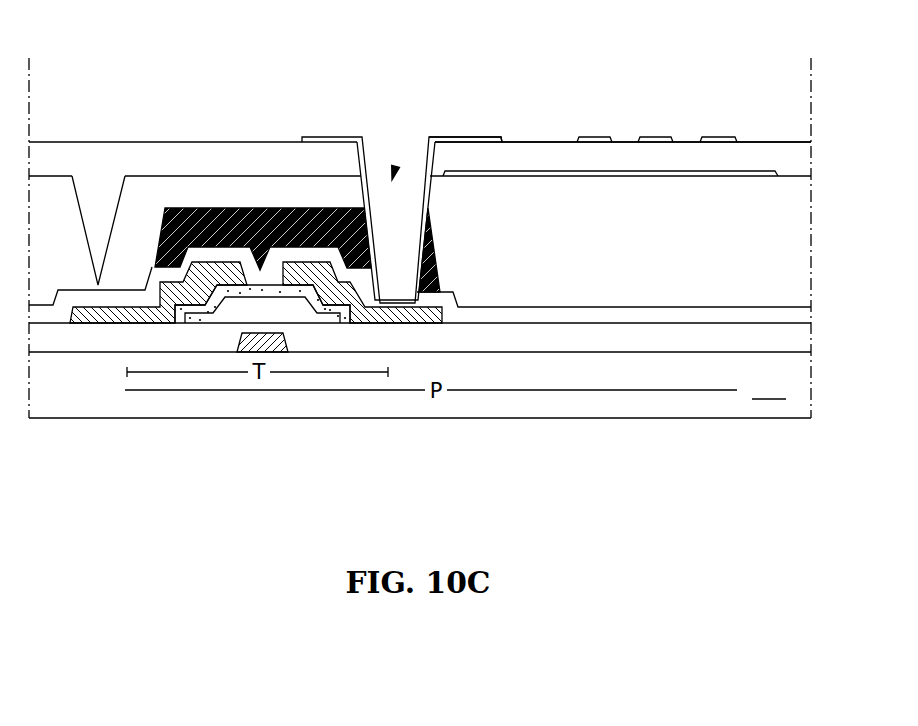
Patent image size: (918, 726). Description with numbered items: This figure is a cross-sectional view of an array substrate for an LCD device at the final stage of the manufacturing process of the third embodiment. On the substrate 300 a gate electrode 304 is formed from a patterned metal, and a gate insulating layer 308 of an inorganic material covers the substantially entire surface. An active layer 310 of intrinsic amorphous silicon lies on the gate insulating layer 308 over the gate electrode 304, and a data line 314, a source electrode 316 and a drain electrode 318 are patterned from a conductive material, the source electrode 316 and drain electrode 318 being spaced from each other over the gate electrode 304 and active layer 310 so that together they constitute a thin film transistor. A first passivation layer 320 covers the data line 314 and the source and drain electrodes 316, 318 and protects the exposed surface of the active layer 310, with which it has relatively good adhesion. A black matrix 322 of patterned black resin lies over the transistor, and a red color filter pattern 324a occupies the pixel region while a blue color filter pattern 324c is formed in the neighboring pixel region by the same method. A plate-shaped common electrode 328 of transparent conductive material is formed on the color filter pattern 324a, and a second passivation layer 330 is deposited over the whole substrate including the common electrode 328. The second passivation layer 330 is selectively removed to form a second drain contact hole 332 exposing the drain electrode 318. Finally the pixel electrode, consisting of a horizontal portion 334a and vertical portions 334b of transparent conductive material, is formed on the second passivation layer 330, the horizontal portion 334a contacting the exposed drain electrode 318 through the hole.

The substrate 300 is at (810, 390).
The gate electrode 304 is at (280, 353).
The gate insulating layer 308 is at (622, 337).
The active layer 310 is at (298, 288).
The data line 314 is at (80, 323).
The source electrode 316 is at (227, 250).
The drain electrode 318 is at (400, 317).
The first passivation layer 320 is at (735, 317).
The black matrix 322 is at (442, 273).
The color filter pattern 324a is at (161, 182).
The blue color filter pattern 324c is at (73, 176).
The common electrode 328 is at (535, 170).
The second passivation layer 330 is at (450, 148).
The second drain contact hole 332 is at (396, 167).
The horizontal portion of the pixel electrode 334a is at (492, 137).
The vertical portions of the pixel electrode 334b is at (592, 137).